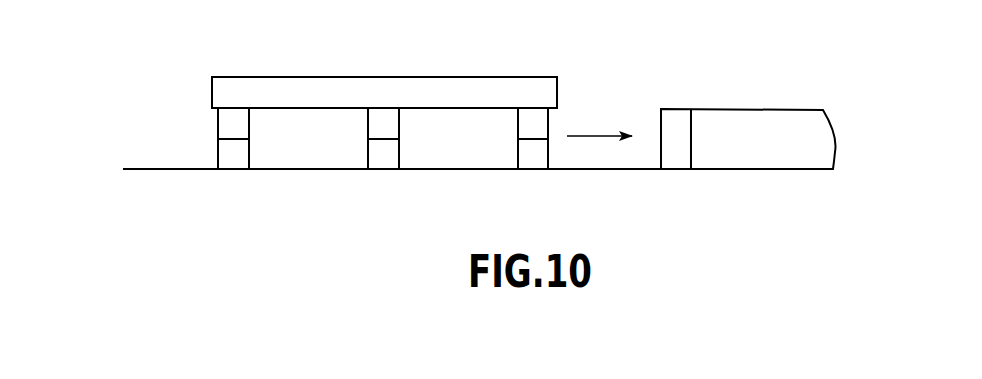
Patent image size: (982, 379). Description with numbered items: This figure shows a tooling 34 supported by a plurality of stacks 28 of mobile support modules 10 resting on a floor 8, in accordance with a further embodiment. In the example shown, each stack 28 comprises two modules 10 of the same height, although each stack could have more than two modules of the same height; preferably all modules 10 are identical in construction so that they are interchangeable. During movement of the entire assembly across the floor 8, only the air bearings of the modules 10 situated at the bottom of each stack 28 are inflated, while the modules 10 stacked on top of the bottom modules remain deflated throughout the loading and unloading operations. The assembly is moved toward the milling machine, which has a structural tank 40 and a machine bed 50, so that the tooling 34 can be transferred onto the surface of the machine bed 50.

The floor 8 is at (143, 168).
The mobile support module 10 is at (249, 123).
The stack 28 is at (192, 130).
The tooling 34 is at (422, 77).
The structural tank 40 is at (658, 111).
The machine bed 50 is at (728, 109).